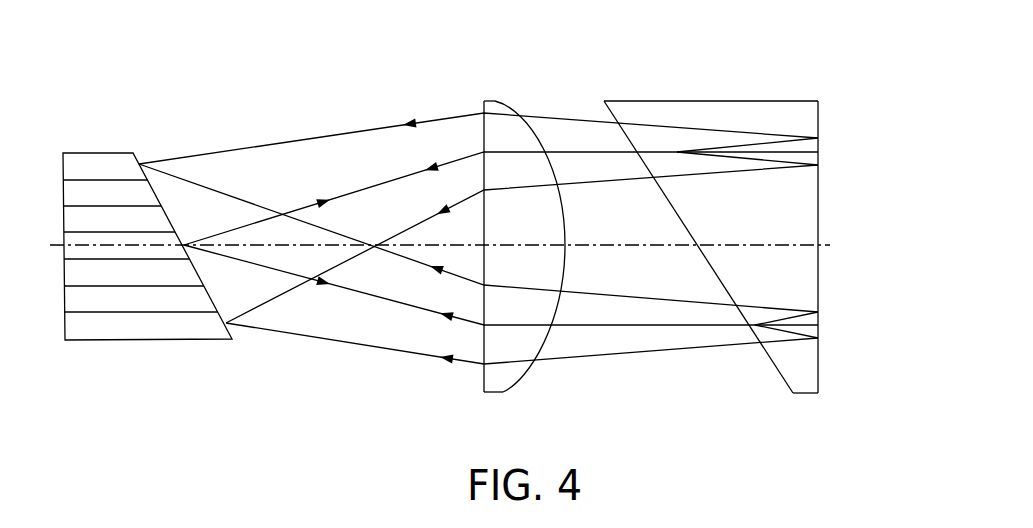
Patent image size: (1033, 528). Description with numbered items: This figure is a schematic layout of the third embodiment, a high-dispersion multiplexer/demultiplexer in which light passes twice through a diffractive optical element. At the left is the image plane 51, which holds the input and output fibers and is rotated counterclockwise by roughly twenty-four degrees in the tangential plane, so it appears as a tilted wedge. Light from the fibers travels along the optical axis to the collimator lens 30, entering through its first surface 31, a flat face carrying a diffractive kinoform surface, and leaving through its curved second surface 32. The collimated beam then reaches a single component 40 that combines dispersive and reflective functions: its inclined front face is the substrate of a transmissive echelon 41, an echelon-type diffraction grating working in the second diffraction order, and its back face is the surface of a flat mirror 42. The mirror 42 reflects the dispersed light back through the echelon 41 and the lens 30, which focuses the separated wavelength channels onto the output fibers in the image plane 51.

The collimator lens 30 is at (509, 215).
The first surface of collimator lens 31 is at (481, 138).
The second surface of collimator lens 32 is at (532, 375).
The single component combining echelon and mirror 40 is at (759, 243).
The substrate of transmissive echelon 41 is at (772, 365).
The surface of flat mirror 42 is at (818, 287).
The image plane 51 is at (137, 155).